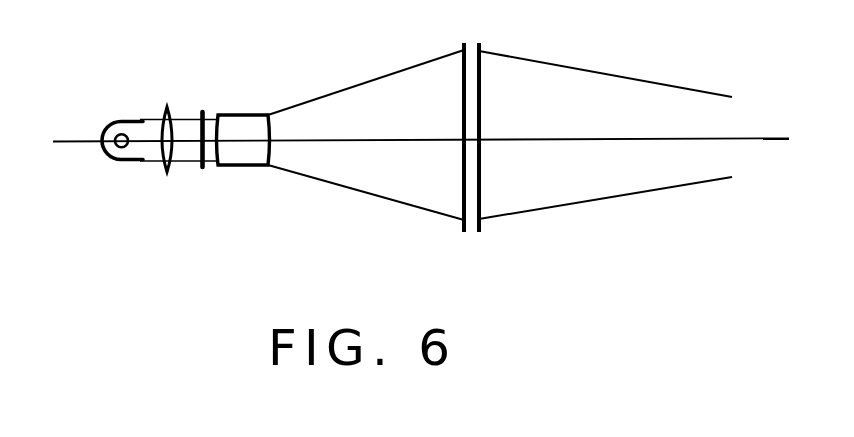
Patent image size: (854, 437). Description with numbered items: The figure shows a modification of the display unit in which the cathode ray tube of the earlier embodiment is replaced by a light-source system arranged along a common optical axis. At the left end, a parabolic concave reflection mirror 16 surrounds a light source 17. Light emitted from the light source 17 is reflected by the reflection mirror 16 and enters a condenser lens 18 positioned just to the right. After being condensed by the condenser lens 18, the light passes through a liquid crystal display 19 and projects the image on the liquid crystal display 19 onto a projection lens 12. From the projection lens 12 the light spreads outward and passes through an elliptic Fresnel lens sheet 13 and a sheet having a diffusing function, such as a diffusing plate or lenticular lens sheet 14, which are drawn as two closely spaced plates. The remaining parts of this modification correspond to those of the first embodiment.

The projection lens 12 is at (250, 167).
The elliptic Fresnel lens sheet 13 is at (463, 197).
The lenticular lens sheet 14 is at (481, 199).
The reflection mirror 16 is at (104, 160).
The light source 17 is at (120, 148).
The condenser lens 18 is at (166, 168).
The liquid crystal display 19 is at (203, 168).